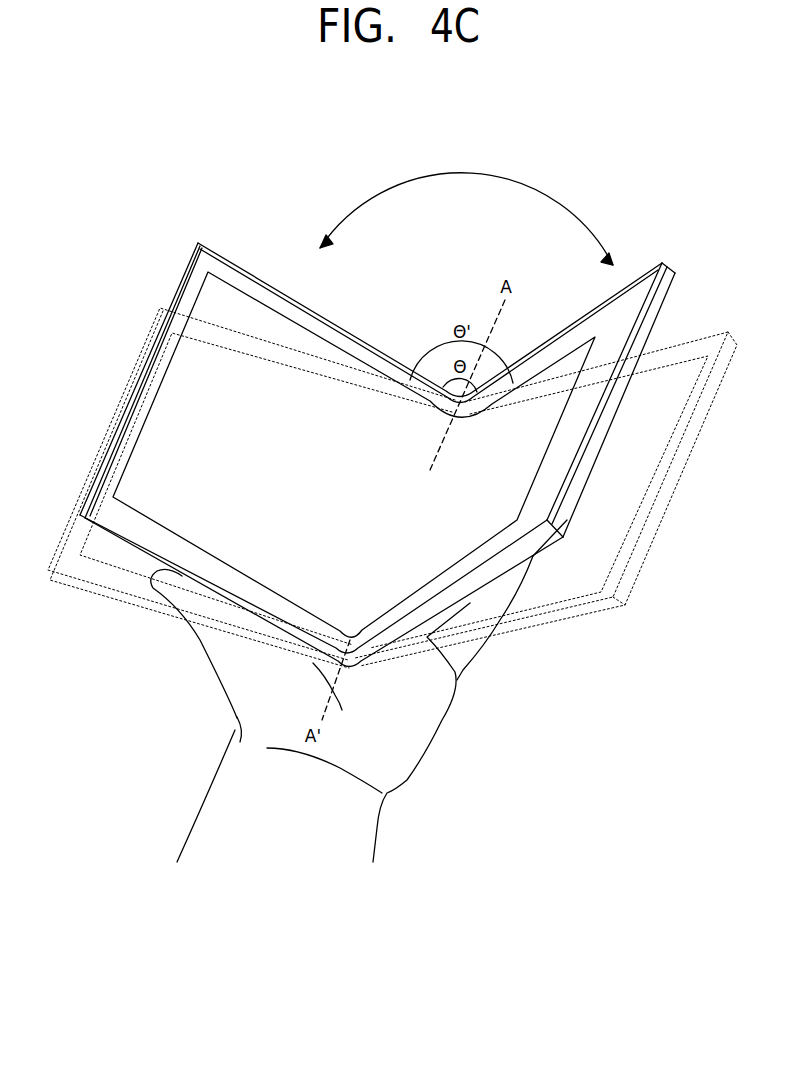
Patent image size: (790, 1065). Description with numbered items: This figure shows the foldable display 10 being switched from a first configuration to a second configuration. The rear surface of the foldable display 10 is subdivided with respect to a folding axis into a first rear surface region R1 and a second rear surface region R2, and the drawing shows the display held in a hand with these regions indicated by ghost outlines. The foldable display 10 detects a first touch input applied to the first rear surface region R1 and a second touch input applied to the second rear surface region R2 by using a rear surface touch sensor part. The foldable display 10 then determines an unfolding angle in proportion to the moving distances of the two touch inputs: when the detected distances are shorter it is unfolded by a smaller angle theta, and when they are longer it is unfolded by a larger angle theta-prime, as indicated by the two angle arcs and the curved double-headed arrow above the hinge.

The foldable display 10 is at (612, 146).
The first rear surface region R1 is at (90, 592).
The second rear surface region R2 is at (577, 618).